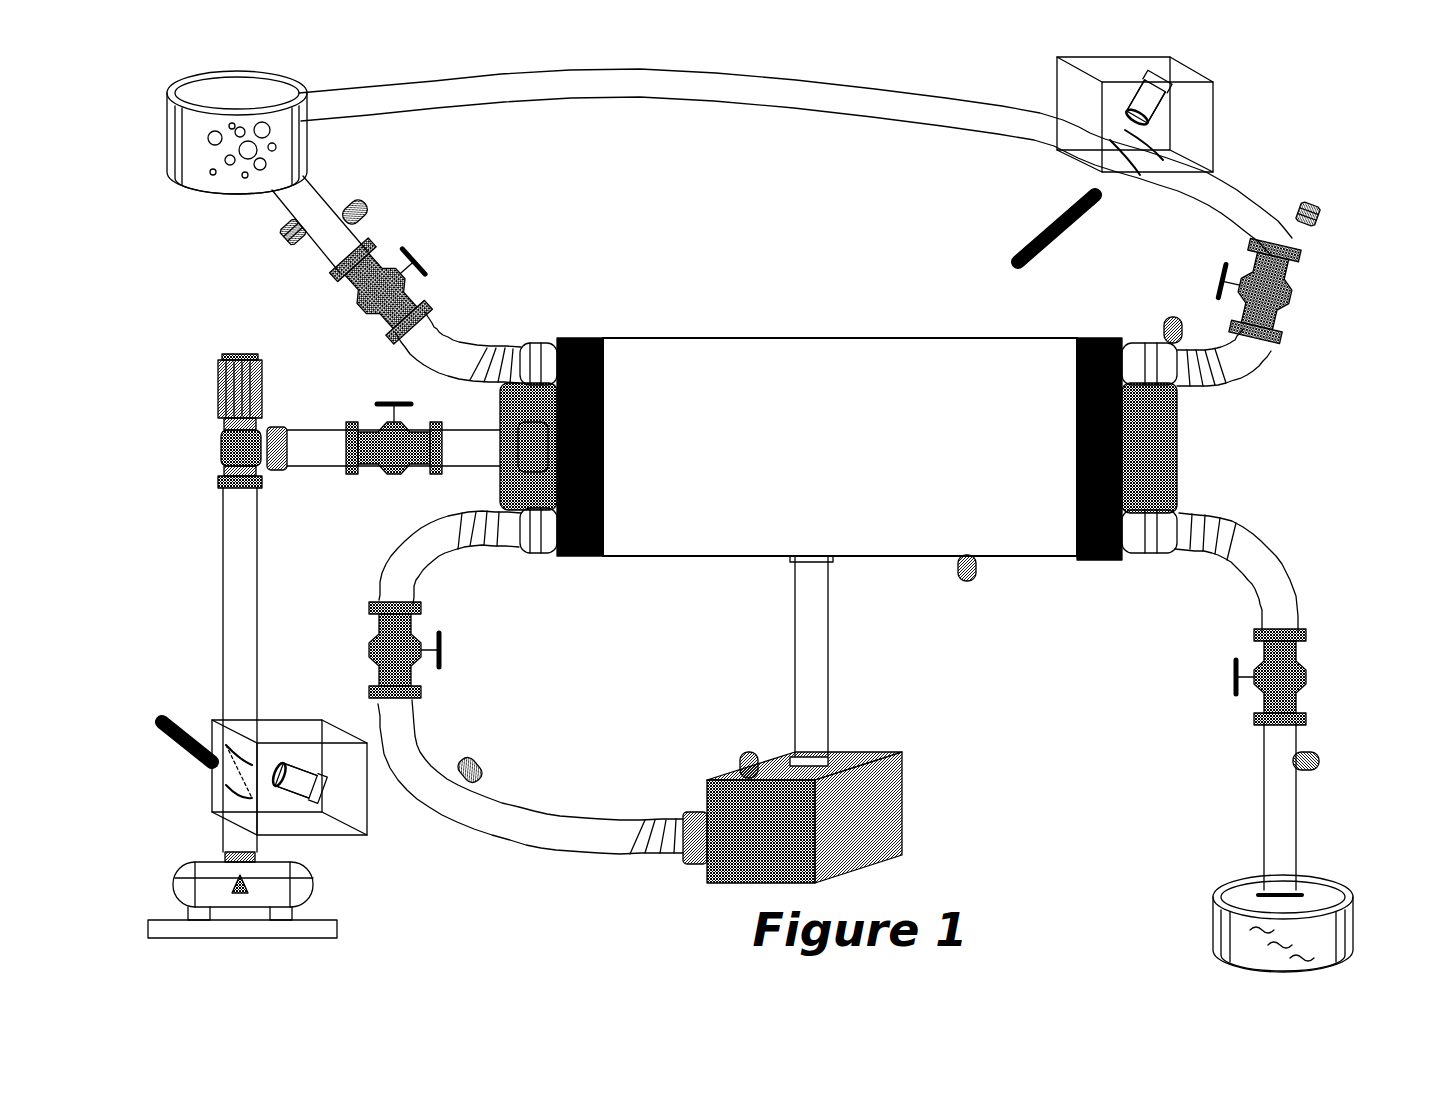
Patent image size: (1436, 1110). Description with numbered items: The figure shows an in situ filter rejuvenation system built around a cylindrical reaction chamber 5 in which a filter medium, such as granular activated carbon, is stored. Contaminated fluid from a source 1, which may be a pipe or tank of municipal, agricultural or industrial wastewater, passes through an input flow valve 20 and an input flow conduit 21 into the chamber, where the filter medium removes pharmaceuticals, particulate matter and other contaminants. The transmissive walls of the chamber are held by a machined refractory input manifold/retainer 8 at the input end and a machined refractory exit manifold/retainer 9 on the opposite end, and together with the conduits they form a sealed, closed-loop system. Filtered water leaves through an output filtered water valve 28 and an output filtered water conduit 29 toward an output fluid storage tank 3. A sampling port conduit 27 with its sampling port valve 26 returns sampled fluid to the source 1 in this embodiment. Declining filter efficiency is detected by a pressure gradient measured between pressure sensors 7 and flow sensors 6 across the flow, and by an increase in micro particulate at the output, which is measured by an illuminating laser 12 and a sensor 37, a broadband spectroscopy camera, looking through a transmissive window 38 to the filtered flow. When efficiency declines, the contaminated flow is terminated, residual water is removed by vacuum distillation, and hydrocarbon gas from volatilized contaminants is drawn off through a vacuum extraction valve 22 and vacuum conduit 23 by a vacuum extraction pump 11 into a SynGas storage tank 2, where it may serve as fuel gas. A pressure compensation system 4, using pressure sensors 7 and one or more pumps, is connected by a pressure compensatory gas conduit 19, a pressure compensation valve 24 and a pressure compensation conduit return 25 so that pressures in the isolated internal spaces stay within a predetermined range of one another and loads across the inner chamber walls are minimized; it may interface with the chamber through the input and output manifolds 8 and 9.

The source of contaminated input material 1 is at (195, 190).
The SynGas storage tank 2 is at (318, 882).
The output fluid storage tank 3 is at (1225, 890).
The pressure compensation system 4 is at (875, 752).
The reaction chamber 5 is at (690, 338).
The flow sensor 6 is at (284, 243).
The pressure sensor 7 is at (362, 210).
The machined refractory input manifold/retainer 8 is at (578, 338).
The machined refractory exit manifold/retainer 9 is at (1105, 560).
The vacuum extraction pump 11 is at (225, 442).
The illuminating laser 12 is at (1012, 255).
The pressure compensatory gas conduit 19 is at (830, 645).
The input flow valve 20 is at (412, 260).
The input flow conduit 21 is at (450, 322).
The vacuum extraction valve 22 is at (392, 474).
The vacuum conduit 23 is at (222, 505).
The pressure compensation valve 24 is at (418, 630).
The pressure compensation conduit return 25 is at (548, 802).
The sampling port valve 26 is at (1283, 335).
The sampling port conduit 27 is at (1248, 378).
The output filtered water valve 28 is at (1305, 660).
The output filtered water conduit 29 is at (1272, 560).
The sensor 37 is at (1180, 112).
The transmissive window to the filtered flow 38 is at (1122, 172).